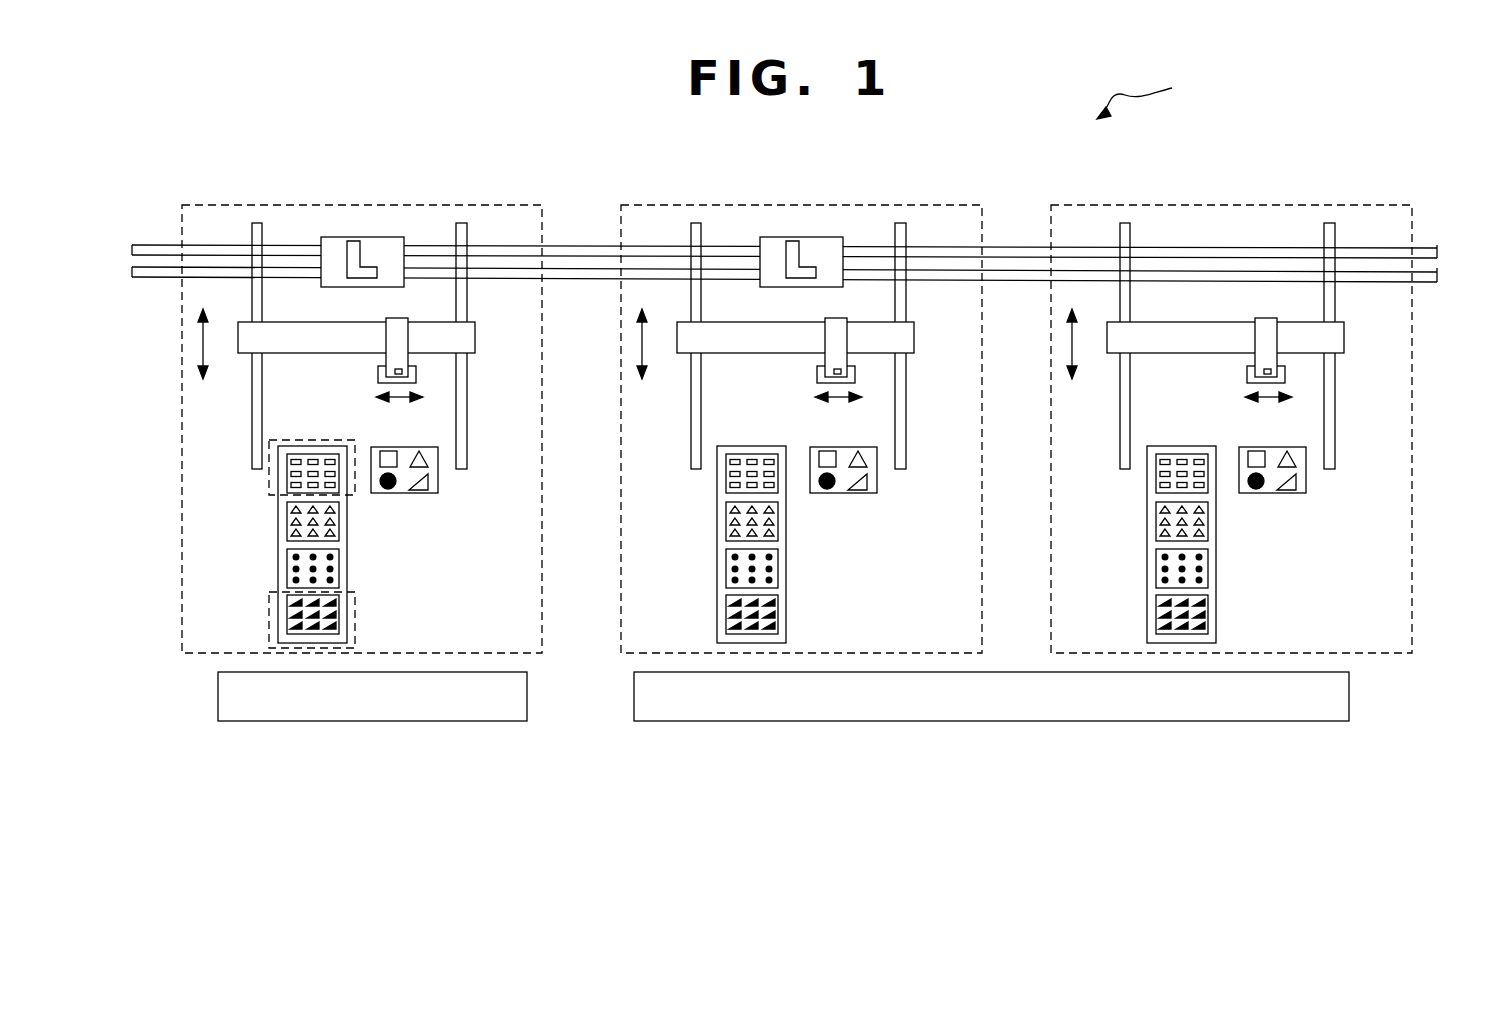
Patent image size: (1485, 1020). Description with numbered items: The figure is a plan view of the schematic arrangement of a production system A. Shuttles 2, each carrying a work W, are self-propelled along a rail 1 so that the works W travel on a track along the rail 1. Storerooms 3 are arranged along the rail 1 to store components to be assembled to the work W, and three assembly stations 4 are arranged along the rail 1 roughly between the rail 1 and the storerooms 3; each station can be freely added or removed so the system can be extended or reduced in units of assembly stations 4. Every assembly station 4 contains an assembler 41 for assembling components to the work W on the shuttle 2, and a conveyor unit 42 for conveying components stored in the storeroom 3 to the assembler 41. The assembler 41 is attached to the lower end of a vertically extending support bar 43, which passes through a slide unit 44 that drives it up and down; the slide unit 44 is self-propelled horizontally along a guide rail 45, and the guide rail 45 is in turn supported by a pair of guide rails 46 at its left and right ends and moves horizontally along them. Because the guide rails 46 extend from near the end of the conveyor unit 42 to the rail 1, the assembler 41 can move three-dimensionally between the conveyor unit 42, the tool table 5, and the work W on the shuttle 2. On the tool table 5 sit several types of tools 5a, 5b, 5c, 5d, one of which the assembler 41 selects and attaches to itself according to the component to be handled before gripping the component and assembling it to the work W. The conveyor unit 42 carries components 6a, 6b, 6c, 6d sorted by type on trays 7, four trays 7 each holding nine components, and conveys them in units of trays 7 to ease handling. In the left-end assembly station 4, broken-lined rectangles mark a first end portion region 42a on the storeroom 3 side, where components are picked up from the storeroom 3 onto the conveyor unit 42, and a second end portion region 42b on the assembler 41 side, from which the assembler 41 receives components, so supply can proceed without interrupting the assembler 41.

The production system A is at (1195, 103).
The rail 1 is at (1437, 264).
The shuttle 2 is at (380, 237).
The work W is at (350, 253).
The storeroom 3 is at (358, 722).
The assembly station 4 is at (483, 204).
The tool table 5 is at (861, 474).
The tool 5a is at (388, 451).
The tool 5b is at (420, 451).
The tool 5c is at (388, 490).
The tool 5d is at (420, 490).
The component 6a is at (296, 452).
The component 6b is at (290, 530).
The component 6c is at (290, 562).
The component 6d is at (290, 604).
The tray 7 is at (290, 522).
The assembler 41 is at (366, 377).
The conveyor unit 42 is at (707, 521).
The first end portion region 42a is at (375, 630).
The second end portion region 42b is at (341, 440).
The support bar 43 is at (403, 372).
The slide unit 44 is at (397, 320).
The guide rail 45 is at (468, 340).
The guide rail 46 is at (262, 291).